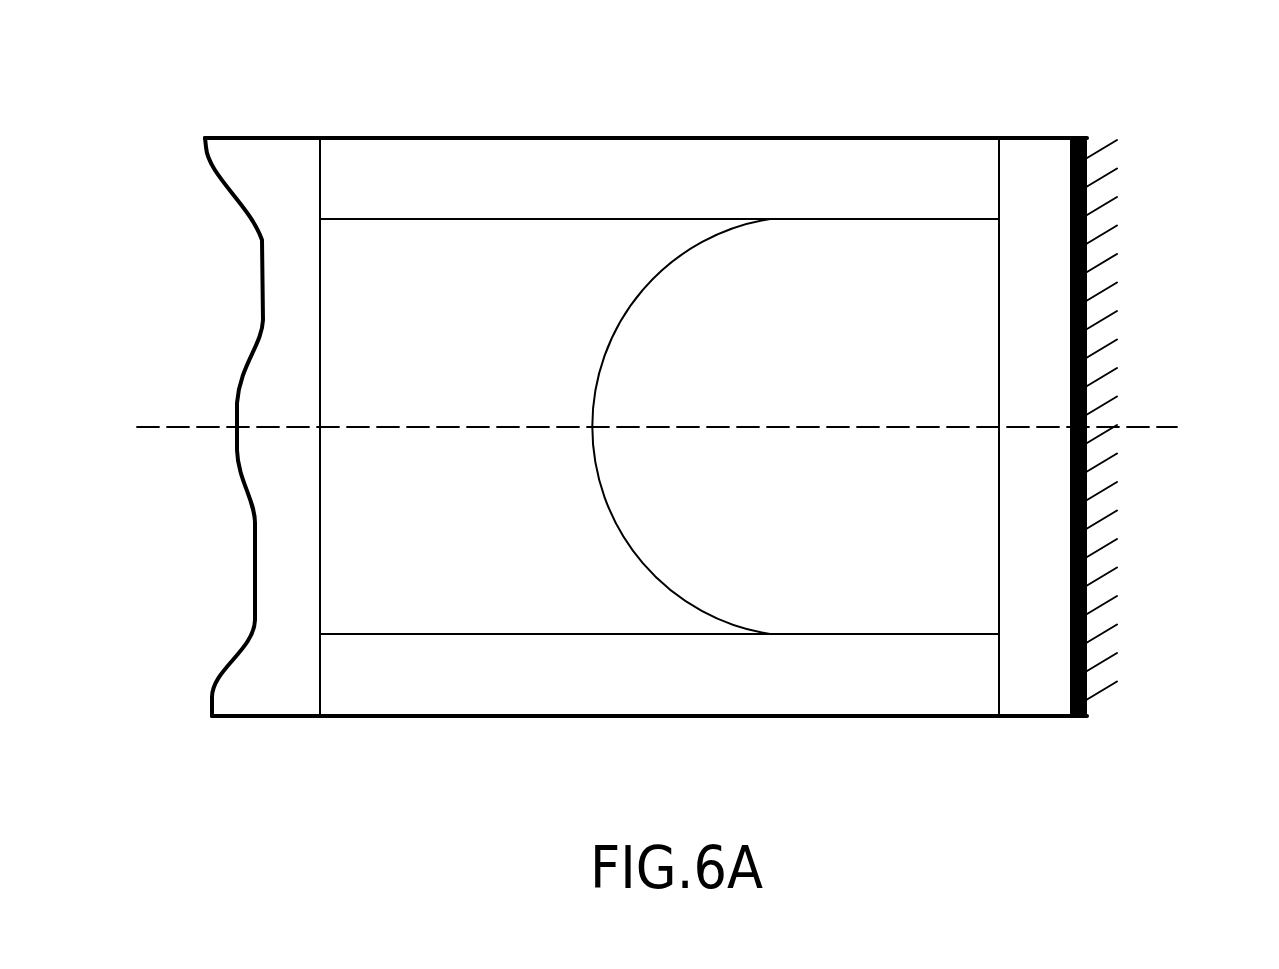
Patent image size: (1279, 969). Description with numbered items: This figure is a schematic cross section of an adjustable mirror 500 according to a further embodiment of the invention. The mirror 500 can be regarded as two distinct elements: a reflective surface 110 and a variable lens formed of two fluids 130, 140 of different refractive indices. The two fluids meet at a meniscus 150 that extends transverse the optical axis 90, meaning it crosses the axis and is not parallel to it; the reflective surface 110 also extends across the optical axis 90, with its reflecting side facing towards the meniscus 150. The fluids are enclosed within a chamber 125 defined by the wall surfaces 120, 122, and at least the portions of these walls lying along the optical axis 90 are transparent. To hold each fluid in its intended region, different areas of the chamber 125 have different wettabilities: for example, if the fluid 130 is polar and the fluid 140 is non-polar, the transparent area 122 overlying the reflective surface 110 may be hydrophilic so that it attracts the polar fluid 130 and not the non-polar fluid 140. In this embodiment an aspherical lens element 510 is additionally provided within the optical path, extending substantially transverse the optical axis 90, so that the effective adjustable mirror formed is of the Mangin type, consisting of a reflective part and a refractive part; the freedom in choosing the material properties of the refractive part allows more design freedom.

The optical axis 90 is at (158, 428).
The reflective surface 110 is at (1077, 138).
The chamber wall surface 120 is at (668, 217).
The transparent area 122 is at (1000, 270).
The chamber 125 is at (457, 235).
The first fluid 130 is at (812, 598).
The second fluid 140 is at (435, 598).
The meniscus 150 is at (672, 598).
The adjustable mirror 500 is at (1139, 213).
The aspherical lens element 510 is at (303, 168).